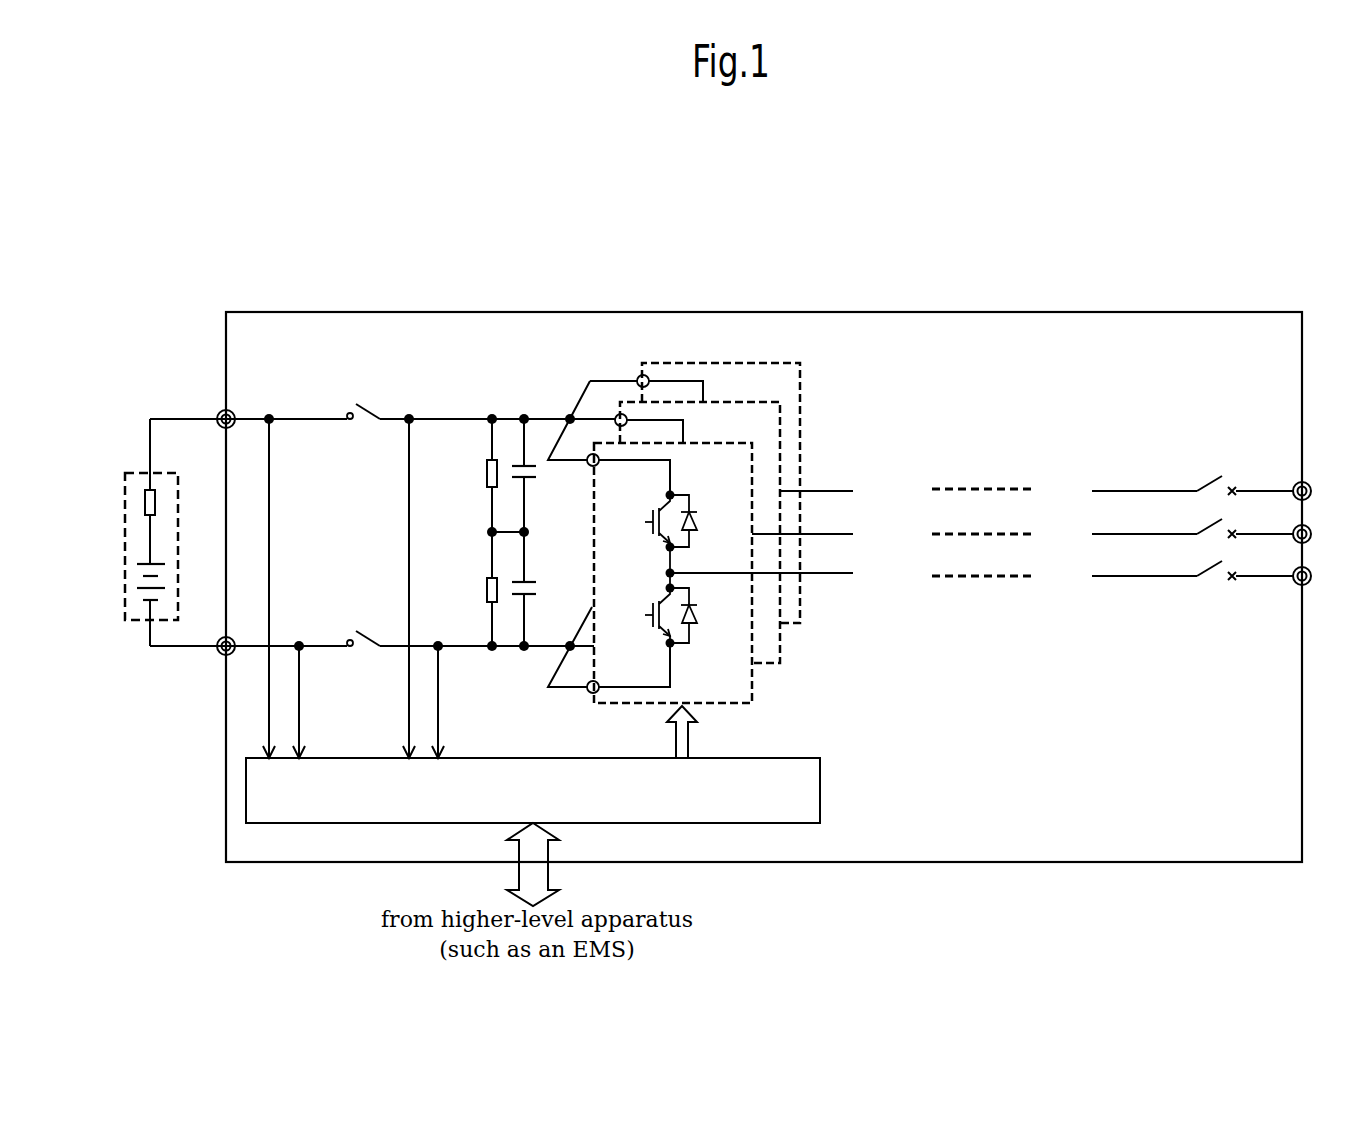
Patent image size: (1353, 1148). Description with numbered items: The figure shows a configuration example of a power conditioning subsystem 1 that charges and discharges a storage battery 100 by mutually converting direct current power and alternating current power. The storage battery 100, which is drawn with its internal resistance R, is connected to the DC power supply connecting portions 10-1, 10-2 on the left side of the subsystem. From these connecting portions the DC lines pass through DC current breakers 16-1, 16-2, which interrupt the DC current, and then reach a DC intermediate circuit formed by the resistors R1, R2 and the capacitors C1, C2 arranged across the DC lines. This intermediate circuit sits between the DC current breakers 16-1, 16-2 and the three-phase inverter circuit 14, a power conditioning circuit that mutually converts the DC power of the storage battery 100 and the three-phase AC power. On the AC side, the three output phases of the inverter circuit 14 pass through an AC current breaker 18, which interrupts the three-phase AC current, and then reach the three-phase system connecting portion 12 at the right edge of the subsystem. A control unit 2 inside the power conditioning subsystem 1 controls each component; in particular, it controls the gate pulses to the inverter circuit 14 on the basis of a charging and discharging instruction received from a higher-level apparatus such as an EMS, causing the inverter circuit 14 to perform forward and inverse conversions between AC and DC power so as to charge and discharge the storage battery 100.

The power conditioning subsystem 1 is at (748, 312).
The storage battery 100 is at (157, 532).
The DC power supply connecting portion 10-1 is at (217, 414).
The DC power supply connecting portion 10-2 is at (218, 652).
The DC current breaker 16-1 is at (398, 403).
The DC current breaker 16-2 is at (390, 628).
The three-phase inverter circuit 14 is at (810, 405).
The AC current breaker 18 is at (1207, 483).
The three-phase system connecting portion 12 is at (1293, 480).
The control unit 2 is at (821, 793).
The internal resistance R is at (157, 502).
The resistor of DC intermediate circuit R1 is at (478, 475).
The resistor of DC intermediate circuit R2 is at (478, 589).
The capacitor of DC intermediate circuit C1 is at (535, 475).
The capacitor of DC intermediate circuit C2 is at (535, 589).